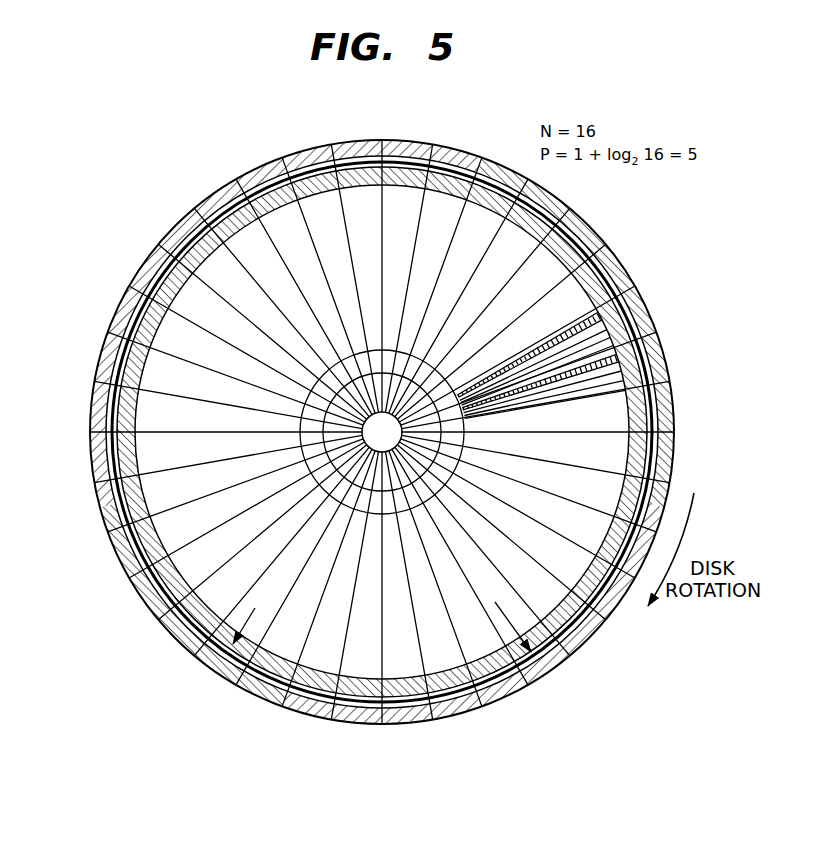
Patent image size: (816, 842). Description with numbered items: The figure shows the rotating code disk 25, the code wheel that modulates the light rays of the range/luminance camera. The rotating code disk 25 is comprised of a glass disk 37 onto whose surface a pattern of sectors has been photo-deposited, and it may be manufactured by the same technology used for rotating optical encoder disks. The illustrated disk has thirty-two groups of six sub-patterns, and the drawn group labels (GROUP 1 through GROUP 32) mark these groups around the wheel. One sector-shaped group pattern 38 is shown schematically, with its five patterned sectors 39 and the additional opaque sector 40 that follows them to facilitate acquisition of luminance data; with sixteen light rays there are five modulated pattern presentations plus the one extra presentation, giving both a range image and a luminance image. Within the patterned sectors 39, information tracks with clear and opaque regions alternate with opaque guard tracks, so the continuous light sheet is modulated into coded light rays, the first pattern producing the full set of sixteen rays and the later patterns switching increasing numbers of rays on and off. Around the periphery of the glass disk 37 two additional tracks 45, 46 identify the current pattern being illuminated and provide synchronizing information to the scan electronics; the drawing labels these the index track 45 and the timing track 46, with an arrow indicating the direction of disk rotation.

The rotating code disk 25 is at (154, 237).
The glass disk 37 is at (108, 550).
The sector-shaped group pattern 38 is at (524, 413).
The five patterned sectors 39 is at (629, 371).
The additional opaque sector 40 is at (663, 332).
The additional track 45 is at (554, 684).
The additional track 46 is at (213, 663).
The group 32 is at (325, 727).
The group 1 is at (435, 757).